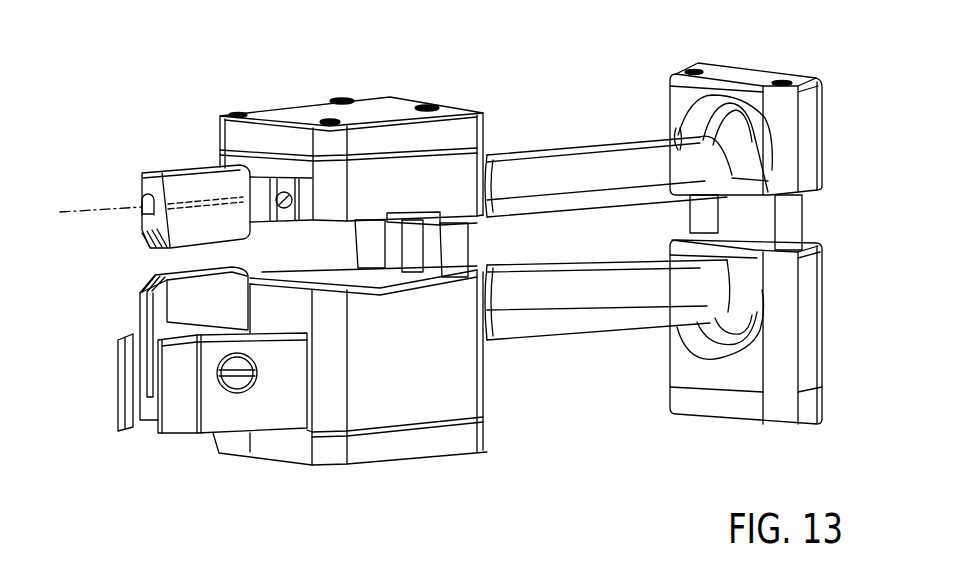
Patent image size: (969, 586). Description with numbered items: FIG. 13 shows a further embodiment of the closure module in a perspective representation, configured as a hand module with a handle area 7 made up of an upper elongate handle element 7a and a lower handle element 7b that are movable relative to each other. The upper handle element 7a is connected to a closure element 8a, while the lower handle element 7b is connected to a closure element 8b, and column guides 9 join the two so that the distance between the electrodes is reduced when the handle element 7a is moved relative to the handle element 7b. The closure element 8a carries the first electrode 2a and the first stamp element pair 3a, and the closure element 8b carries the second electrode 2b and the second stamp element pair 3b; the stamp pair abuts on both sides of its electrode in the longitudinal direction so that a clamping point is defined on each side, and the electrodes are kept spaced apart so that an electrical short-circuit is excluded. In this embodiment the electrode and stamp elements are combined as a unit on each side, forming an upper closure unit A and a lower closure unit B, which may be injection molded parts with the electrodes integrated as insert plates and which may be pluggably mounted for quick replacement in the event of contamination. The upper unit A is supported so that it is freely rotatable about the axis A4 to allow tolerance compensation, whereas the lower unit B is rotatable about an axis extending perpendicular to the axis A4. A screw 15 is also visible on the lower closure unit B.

The first electrode 2a is at (140, 216).
The second electrode 2b is at (147, 380).
The first stamp element pair 3a is at (196, 180).
The second stamp element pair 3b is at (147, 410).
The handle area 7 is at (601, 112).
The upper handle element 7a is at (541, 160).
The lower handle element 7b is at (638, 312).
The closure element 8a is at (284, 104).
The closure element 8b is at (383, 405).
The column guides 9 is at (465, 247).
The fastening screw 15 is at (243, 390).
The closure unit A is at (126, 171).
The lower closure unit B is at (122, 310).
The axis A4 is at (89, 218).